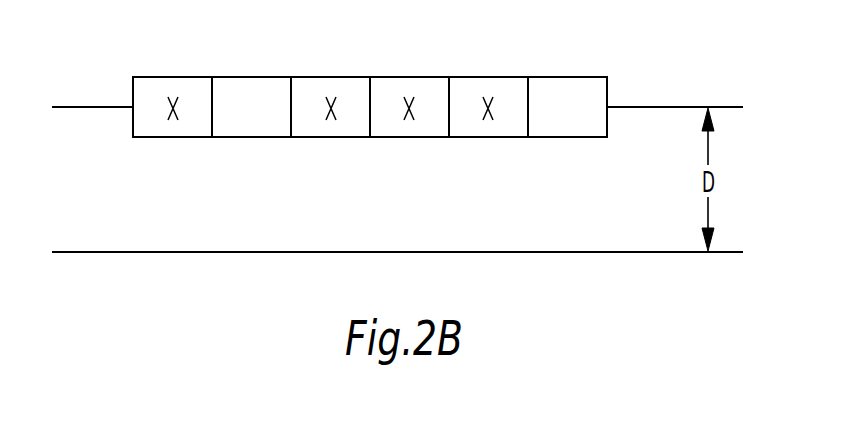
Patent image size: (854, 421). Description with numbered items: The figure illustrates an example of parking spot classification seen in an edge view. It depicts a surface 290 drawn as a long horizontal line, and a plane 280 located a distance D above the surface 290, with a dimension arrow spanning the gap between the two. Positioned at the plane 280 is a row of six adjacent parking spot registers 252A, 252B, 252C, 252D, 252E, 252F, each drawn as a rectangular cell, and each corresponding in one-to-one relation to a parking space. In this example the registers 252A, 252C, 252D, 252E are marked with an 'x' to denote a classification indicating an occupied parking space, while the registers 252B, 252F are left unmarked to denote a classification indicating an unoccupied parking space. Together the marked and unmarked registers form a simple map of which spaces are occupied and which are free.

The plane 280 is at (93, 101).
The surface 290 is at (97, 250).
The parking spot register 252A is at (173, 75).
The parking spot register 252B is at (252, 75).
The parking spot register 252C is at (331, 75).
The parking spot register 252D is at (410, 75).
The parking spot register 252E is at (489, 75).
The parking spot register 252F is at (567, 75).